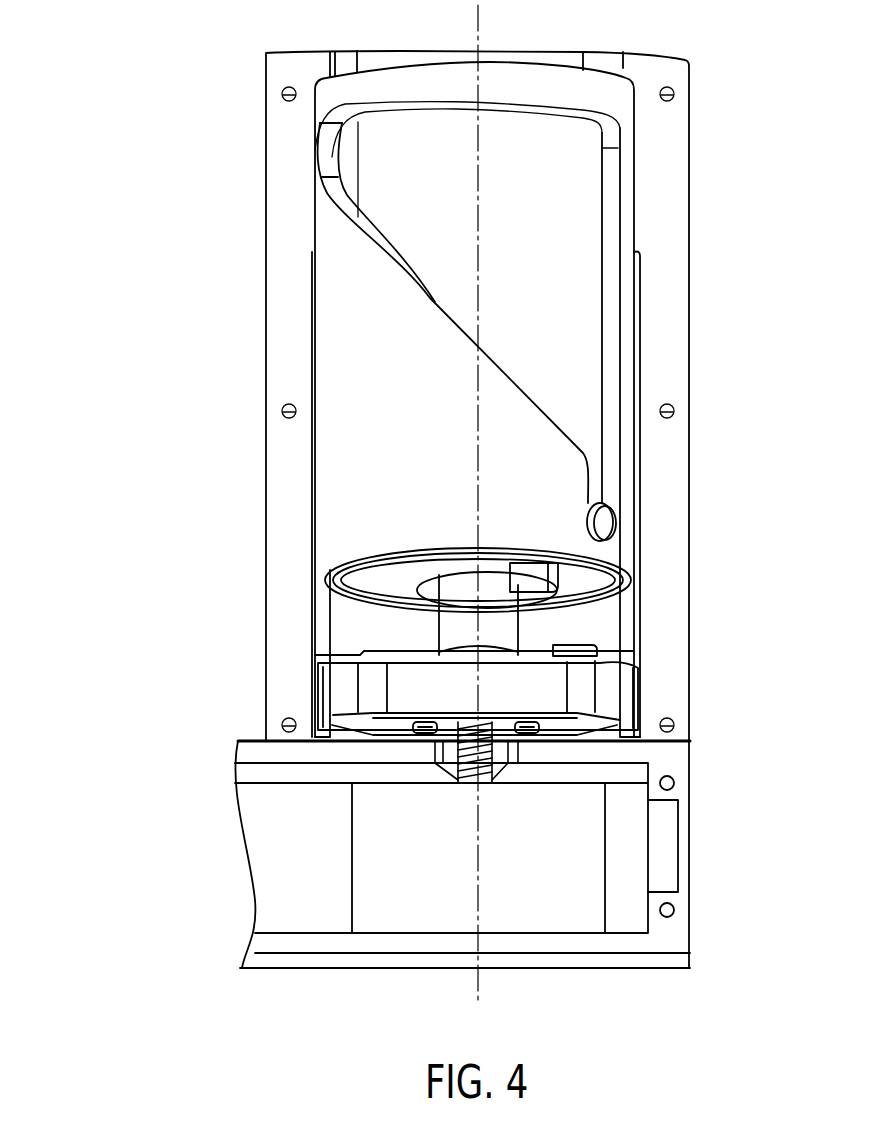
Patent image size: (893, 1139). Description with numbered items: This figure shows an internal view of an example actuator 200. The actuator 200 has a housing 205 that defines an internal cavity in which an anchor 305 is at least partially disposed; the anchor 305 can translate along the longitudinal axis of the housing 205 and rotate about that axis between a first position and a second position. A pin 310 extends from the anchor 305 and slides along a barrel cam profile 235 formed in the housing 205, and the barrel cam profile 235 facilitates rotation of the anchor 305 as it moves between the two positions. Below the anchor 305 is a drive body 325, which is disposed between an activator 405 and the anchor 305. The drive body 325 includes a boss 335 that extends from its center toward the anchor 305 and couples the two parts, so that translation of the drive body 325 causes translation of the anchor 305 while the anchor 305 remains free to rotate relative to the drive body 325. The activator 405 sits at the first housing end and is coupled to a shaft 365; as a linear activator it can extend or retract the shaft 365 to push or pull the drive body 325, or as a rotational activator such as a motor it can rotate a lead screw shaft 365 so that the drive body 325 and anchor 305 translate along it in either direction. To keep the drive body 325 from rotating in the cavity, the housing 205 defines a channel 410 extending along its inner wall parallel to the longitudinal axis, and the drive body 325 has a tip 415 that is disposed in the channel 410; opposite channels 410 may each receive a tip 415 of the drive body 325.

The actuator 200 is at (112, 110).
The housing 205 is at (288, 189).
The barrel cam profile 235 is at (427, 295).
The anchor 305 is at (565, 228).
The pin 310 is at (602, 522).
The drive body 325 is at (418, 672).
The boss 335 is at (453, 628).
The shaft 365 is at (455, 752).
The activator 405 is at (350, 840).
The channel 410 is at (628, 627).
The tip 415 is at (343, 695).